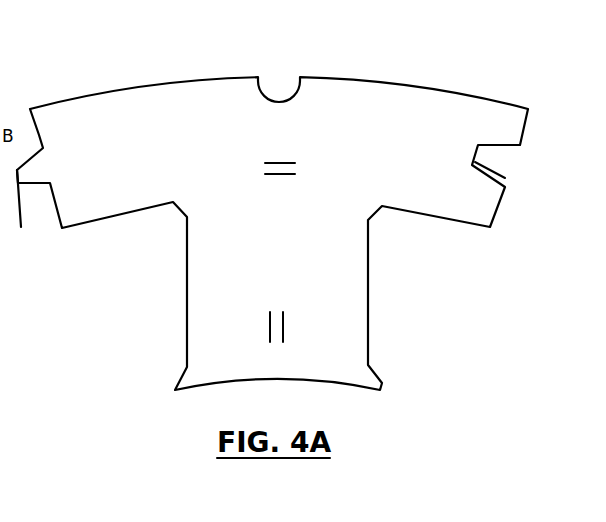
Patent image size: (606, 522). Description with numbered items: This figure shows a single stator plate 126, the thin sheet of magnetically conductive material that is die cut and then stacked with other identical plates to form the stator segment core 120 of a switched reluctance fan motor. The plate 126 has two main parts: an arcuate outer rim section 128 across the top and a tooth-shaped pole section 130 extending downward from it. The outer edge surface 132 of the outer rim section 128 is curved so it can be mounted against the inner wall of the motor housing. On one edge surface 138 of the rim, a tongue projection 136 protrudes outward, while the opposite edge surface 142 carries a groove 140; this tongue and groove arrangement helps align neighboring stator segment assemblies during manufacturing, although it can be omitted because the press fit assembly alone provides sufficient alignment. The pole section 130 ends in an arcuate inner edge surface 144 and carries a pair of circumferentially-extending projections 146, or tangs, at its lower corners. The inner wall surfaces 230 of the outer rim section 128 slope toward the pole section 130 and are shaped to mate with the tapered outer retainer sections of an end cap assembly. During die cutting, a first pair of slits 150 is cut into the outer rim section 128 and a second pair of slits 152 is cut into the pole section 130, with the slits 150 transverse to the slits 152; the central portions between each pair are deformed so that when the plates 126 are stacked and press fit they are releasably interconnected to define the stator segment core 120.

The stator segment core 120 is at (448, 67).
The stator plate 126 is at (185, 108).
The arcuate outer rim section 128 is at (423, 151).
The tooth-shaped pole section 130 is at (299, 275).
The outer edge surface 132 is at (102, 90).
The tongue projection 136 is at (39, 203).
The edge surface 138 is at (39, 135).
The groove 140 is at (505, 178).
The opposite edge surface 142 is at (520, 130).
The arcuate inner edge surface 144 is at (327, 383).
The circumferentially-extending projections 146 is at (173, 385).
The first pair of slits 150 is at (282, 158).
The second pair of slits 152 is at (268, 327).
The inner wall surfaces 230 is at (118, 218).